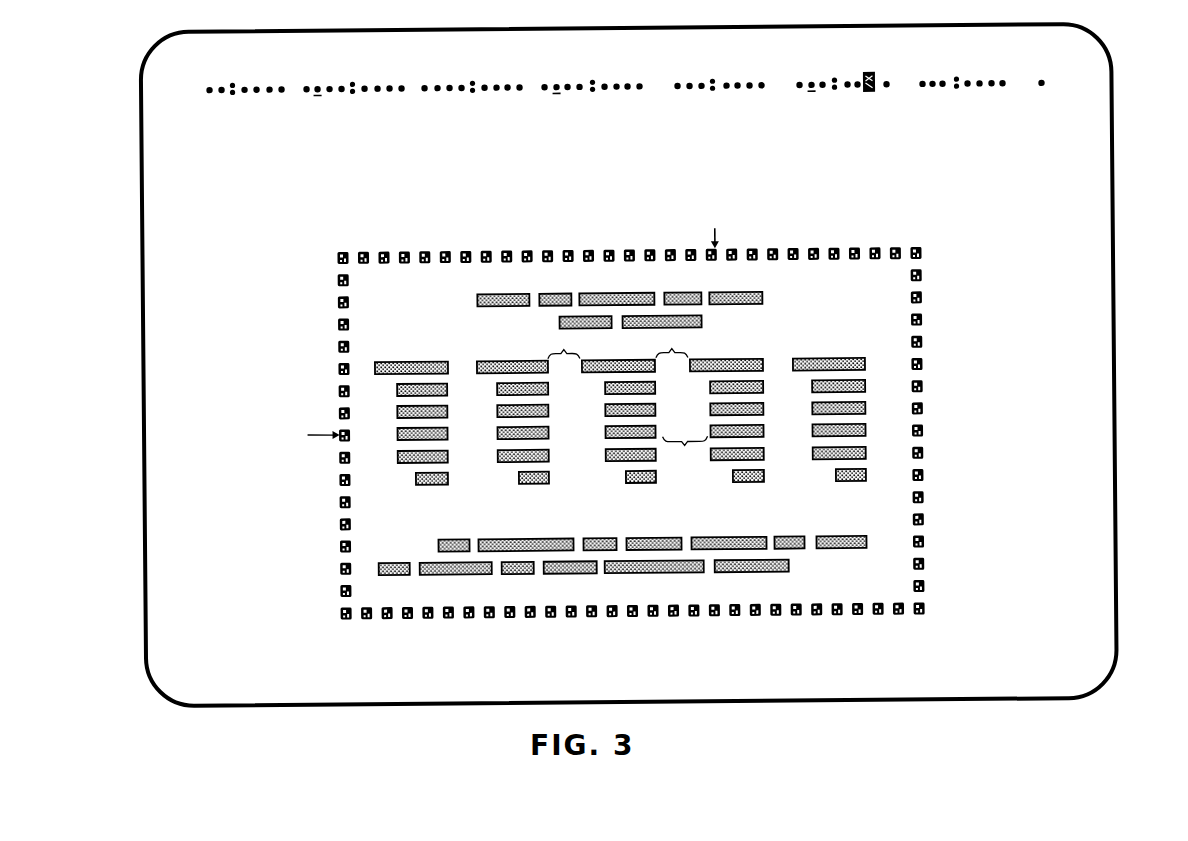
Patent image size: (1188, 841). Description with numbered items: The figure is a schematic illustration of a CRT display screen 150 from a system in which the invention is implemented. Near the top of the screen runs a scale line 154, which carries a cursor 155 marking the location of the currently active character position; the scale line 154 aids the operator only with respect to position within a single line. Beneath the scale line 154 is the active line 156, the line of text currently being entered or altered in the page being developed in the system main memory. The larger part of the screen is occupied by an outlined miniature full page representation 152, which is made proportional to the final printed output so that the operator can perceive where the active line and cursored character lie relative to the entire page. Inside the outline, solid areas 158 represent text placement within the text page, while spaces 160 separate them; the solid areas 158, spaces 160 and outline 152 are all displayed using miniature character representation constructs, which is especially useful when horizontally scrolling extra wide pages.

The CRT display screen 150 is at (1119, 304).
The outlined miniature full page representation 152 is at (924, 276).
The scale line 154 is at (1056, 77).
The cursor 155 is at (876, 71).
The active line 156 is at (987, 120).
The solid areas 158 is at (764, 299).
The spaces 160 is at (595, 646).